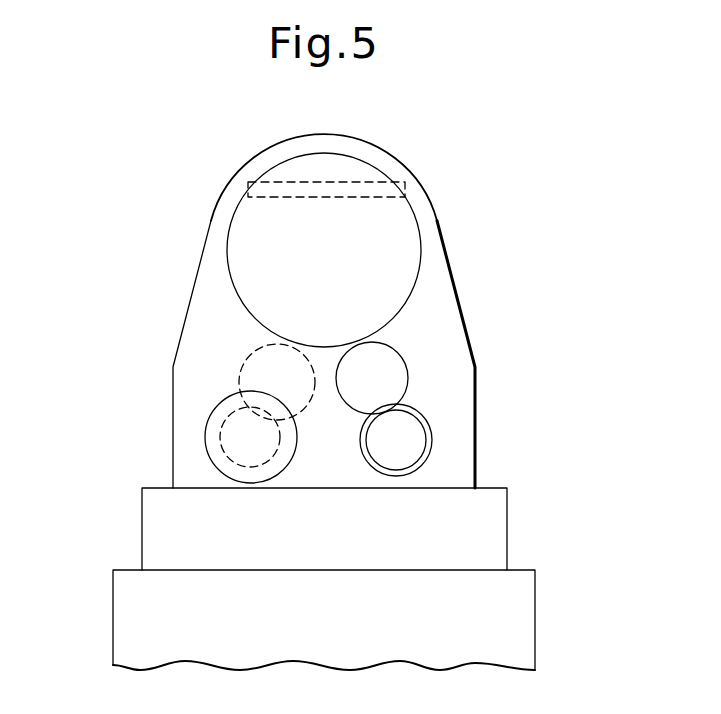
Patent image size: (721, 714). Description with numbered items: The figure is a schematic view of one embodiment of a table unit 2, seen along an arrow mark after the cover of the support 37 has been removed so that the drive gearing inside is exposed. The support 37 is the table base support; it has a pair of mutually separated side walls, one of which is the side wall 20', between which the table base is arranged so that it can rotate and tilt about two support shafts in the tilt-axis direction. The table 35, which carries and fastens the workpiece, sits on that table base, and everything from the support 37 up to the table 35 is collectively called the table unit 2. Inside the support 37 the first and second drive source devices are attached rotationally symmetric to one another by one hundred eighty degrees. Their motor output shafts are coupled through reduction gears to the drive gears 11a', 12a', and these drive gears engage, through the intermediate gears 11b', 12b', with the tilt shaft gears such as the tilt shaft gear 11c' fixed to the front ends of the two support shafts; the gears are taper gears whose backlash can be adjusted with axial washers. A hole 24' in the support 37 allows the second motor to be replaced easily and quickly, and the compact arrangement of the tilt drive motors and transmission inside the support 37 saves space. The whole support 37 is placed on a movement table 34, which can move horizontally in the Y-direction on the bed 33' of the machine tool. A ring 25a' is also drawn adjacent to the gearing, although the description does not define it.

The table unit 2 is at (157, 163).
The drive gear 11a' is at (475, 440).
The intermediate gear 11b' is at (460, 369).
The tilt shaft gear 11c' is at (389, 250).
The drive gear 12a' is at (183, 432).
The intermediate gear 12b' is at (200, 381).
The side wall 20' is at (290, 203).
The hole 24' is at (191, 437).
The ring 25a' is at (468, 443).
The bed 33' is at (366, 620).
The movement table 34 is at (483, 532).
The table 35 is at (365, 182).
The support 37 is at (193, 287).